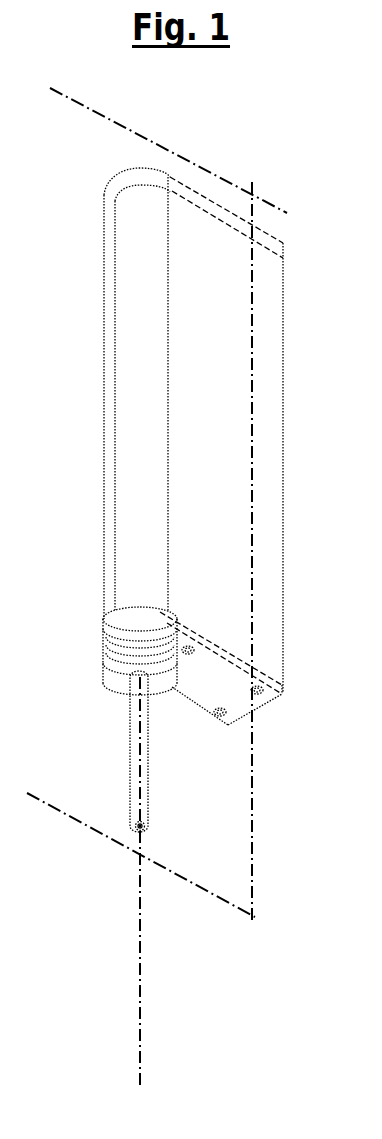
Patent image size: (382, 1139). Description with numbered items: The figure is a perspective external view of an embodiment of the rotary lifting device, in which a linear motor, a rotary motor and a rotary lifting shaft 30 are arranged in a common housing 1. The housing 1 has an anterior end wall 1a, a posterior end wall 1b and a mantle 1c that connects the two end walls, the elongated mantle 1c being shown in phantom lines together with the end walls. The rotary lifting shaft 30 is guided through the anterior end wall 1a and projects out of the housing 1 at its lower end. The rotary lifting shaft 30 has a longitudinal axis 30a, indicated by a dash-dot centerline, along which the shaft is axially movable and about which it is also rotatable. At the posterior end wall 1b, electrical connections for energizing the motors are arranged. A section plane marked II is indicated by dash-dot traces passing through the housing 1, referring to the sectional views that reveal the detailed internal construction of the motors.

The housing 1 is at (126, 425).
The anterior end wall 1a is at (198, 686).
The posterior end wall 1b is at (268, 235).
The mantle 1c is at (130, 352).
The rotary lifting shaft 30 is at (138, 737).
The longitudinal axis 30a is at (138, 983).
The section line II is at (237, 884).